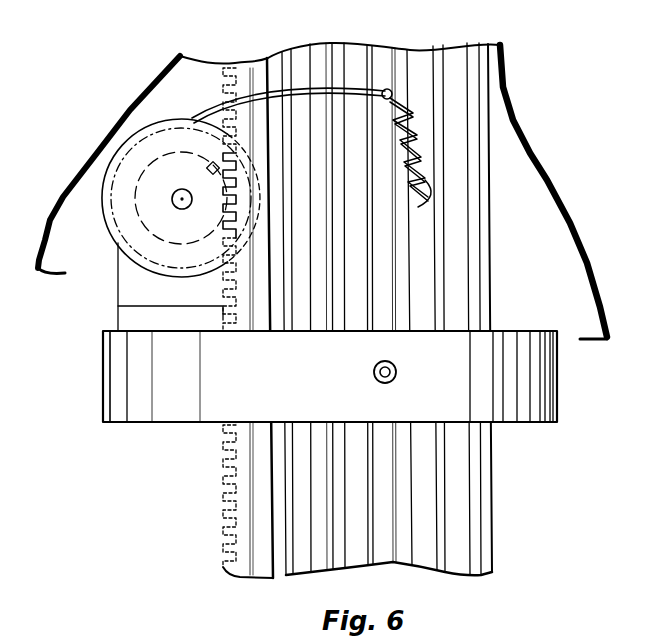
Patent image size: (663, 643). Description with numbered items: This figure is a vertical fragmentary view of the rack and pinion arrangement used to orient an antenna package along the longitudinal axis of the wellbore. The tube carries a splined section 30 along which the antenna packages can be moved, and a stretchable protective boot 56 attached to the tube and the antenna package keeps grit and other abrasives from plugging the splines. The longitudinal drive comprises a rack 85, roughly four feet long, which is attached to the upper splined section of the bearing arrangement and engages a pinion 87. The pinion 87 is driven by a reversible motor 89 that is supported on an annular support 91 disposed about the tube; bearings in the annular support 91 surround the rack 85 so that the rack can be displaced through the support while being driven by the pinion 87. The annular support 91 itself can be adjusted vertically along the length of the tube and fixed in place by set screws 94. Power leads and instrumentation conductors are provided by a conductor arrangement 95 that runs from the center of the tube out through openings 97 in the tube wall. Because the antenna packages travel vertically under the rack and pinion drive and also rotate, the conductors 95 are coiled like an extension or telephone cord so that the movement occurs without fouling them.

The splined section 30 is at (463, 500).
The stretchable protective boot 56 is at (583, 235).
The rack 85 is at (240, 486).
The pinion 87 is at (160, 205).
The reversible motor 89 is at (128, 160).
The annular support 91 is at (555, 376).
The set screws 94 is at (396, 375).
The conductor arrangement 95 is at (248, 93).
The openings 97 is at (388, 88).